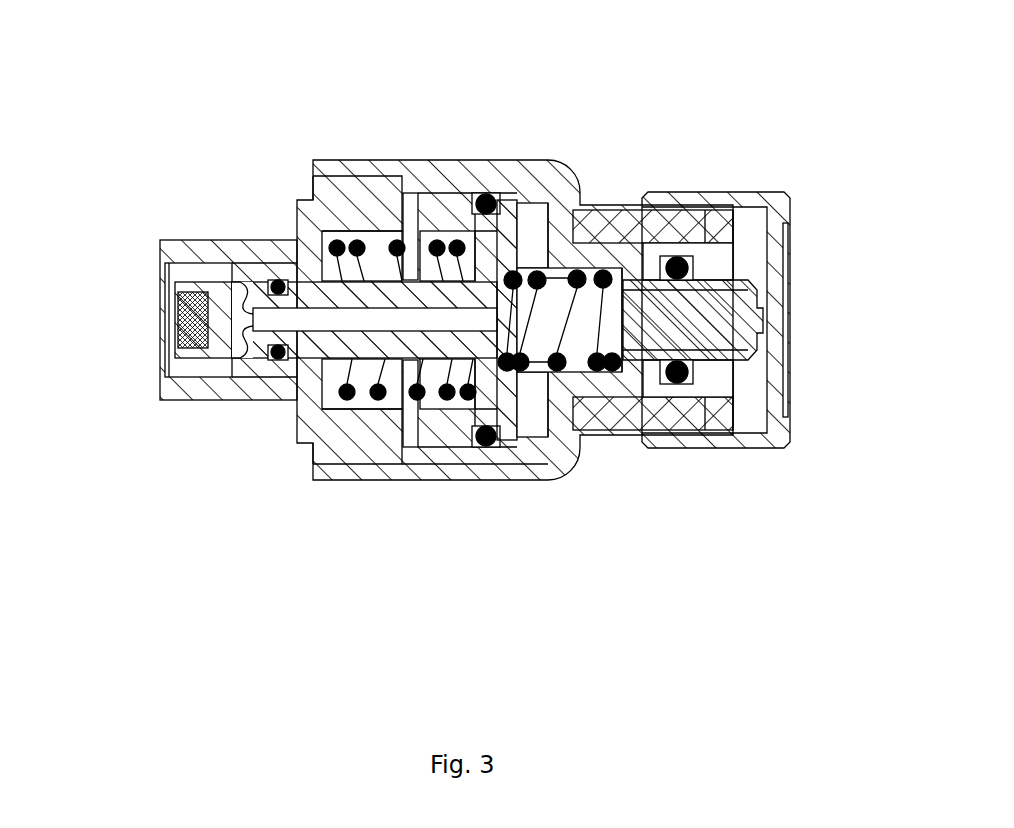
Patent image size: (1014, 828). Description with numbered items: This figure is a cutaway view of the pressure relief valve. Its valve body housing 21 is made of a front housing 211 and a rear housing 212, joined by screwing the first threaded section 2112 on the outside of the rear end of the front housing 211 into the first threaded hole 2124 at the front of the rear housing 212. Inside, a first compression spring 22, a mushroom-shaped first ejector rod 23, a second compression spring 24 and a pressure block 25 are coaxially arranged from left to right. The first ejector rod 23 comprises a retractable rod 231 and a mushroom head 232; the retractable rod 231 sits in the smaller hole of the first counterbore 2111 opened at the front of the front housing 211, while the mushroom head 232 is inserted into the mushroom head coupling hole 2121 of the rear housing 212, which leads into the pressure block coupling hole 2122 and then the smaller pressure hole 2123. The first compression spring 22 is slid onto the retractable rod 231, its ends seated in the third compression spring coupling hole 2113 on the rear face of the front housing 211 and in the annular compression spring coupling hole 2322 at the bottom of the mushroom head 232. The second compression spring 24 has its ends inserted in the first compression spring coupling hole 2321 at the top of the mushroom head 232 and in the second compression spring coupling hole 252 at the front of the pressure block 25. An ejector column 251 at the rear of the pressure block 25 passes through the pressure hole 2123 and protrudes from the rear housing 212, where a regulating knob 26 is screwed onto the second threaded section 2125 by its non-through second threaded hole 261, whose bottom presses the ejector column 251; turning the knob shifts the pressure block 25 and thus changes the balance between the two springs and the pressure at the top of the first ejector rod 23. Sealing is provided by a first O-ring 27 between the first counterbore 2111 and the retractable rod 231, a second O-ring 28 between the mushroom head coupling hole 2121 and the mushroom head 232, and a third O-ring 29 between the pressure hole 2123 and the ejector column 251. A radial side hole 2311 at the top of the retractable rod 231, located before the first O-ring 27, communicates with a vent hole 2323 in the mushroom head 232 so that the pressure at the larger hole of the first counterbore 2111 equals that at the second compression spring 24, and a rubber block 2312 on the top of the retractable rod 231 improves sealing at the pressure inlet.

The valve body housing 21 is at (293, 197).
The front housing 211 is at (255, 262).
The first counterbore 2111 is at (200, 273).
The first threaded section 2112 is at (327, 170).
The third compression spring coupling hole 2113 is at (360, 398).
The rear housing 212 is at (578, 190).
The mushroom head coupling hole 2121 is at (475, 432).
The pressure block coupling hole 2122 is at (620, 400).
The pressure hole 2123 is at (700, 367).
The first threaded hole 2124 is at (402, 472).
The second threaded section 2125 is at (622, 210).
The first compression spring 22 is at (395, 240).
The first ejector rod 23 is at (473, 287).
The second compression spring 24 is at (560, 182).
The pressure block 25 is at (627, 258).
The ejector column 251 is at (705, 318).
The second compression spring coupling hole 252 is at (712, 432).
The regulating knob 26 is at (786, 200).
The second threaded hole 261 is at (727, 428).
The first O-ring 27 is at (277, 285).
The second O-ring 28 is at (483, 193).
The third O-ring 29 is at (683, 262).
The retractable rod 231 is at (363, 322).
The side hole 2311 is at (243, 347).
The rubber block 2312 is at (188, 327).
The mushroom head 232 is at (500, 407).
The first compression spring coupling hole 2321 is at (565, 395).
The annular compression spring coupling hole 2322 is at (465, 410).
The vent hole 2323 is at (330, 350).